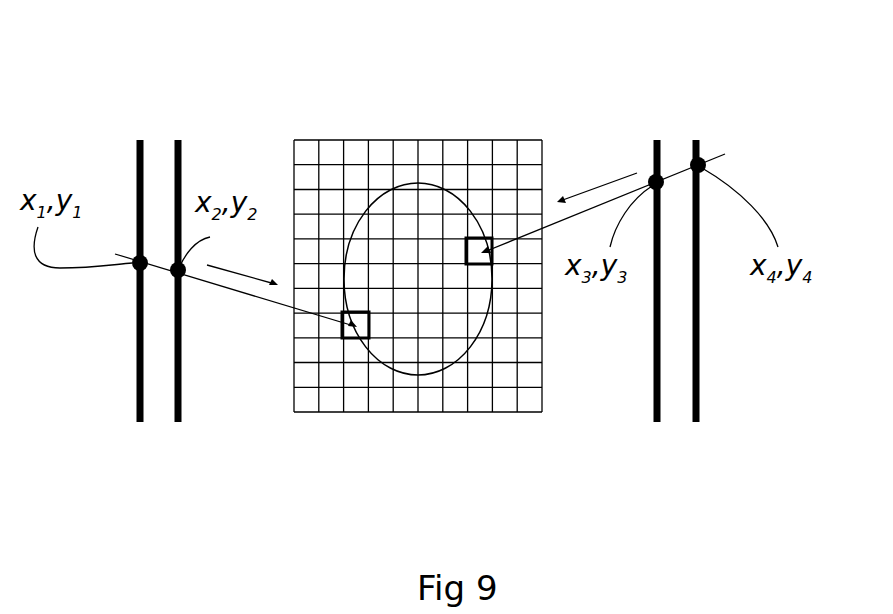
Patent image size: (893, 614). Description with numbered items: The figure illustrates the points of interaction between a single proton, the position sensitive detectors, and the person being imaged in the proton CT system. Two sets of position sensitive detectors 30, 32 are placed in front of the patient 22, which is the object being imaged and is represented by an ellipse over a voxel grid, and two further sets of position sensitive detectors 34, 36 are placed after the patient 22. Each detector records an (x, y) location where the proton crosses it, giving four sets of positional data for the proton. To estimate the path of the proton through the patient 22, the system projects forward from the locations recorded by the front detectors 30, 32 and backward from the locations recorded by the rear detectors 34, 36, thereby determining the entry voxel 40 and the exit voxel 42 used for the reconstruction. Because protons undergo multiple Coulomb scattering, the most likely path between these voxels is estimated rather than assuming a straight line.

The patient 22 is at (427, 182).
The position sensitive detector 30 is at (124, 124).
The position sensitive detector 32 is at (188, 124).
The position sensitive detector 34 is at (643, 124).
The position sensitive detector 36 is at (705, 124).
The entry voxel 40 is at (358, 334).
The exit voxel 42 is at (487, 265).